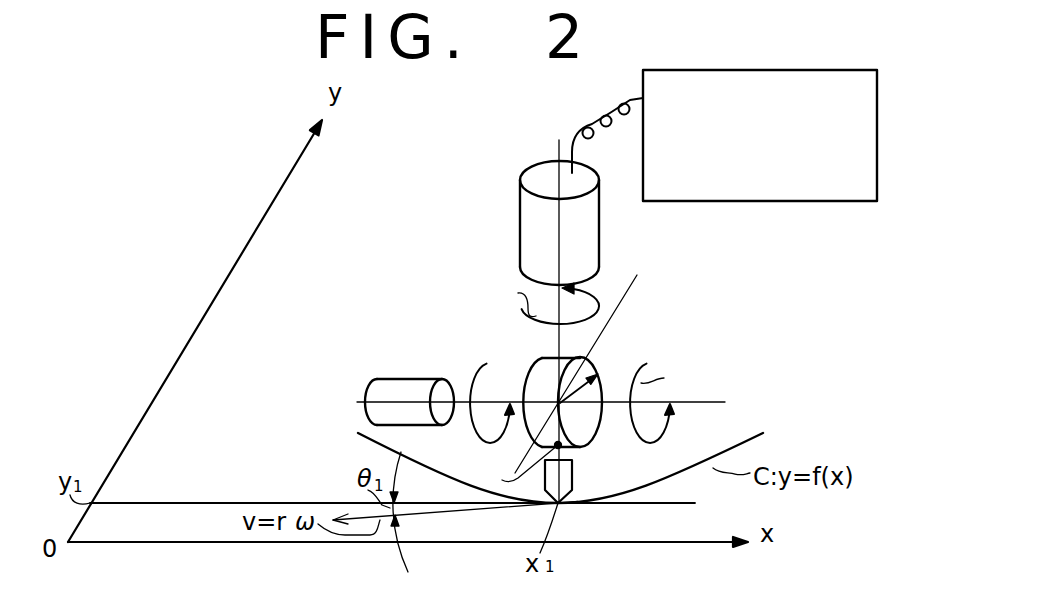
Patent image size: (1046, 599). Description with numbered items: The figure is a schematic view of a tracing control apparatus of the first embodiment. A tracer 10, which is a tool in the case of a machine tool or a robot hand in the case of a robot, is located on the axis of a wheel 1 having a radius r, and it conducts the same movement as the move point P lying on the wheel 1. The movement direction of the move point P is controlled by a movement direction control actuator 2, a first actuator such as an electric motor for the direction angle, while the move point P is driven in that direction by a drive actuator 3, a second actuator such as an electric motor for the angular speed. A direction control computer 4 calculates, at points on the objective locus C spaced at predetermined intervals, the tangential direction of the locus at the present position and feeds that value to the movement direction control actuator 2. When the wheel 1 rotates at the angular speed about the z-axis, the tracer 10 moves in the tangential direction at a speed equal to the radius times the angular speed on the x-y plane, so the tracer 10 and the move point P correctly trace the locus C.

The wheel 1 is at (532, 383).
The movement direction control actuator 2 is at (520, 222).
The drive actuator 3 is at (366, 388).
The direction control computer 4 is at (733, 202).
The tracer 10 is at (573, 477).